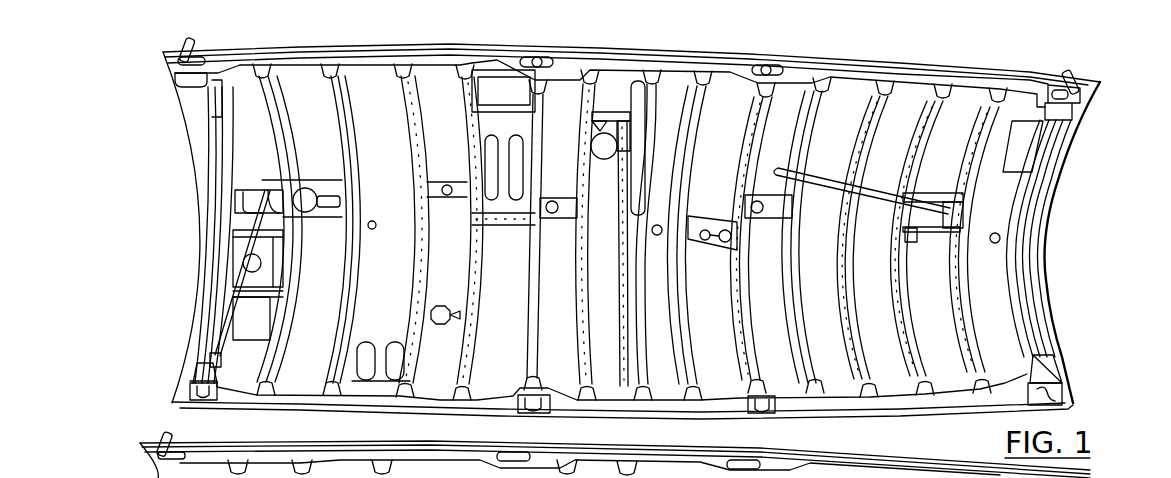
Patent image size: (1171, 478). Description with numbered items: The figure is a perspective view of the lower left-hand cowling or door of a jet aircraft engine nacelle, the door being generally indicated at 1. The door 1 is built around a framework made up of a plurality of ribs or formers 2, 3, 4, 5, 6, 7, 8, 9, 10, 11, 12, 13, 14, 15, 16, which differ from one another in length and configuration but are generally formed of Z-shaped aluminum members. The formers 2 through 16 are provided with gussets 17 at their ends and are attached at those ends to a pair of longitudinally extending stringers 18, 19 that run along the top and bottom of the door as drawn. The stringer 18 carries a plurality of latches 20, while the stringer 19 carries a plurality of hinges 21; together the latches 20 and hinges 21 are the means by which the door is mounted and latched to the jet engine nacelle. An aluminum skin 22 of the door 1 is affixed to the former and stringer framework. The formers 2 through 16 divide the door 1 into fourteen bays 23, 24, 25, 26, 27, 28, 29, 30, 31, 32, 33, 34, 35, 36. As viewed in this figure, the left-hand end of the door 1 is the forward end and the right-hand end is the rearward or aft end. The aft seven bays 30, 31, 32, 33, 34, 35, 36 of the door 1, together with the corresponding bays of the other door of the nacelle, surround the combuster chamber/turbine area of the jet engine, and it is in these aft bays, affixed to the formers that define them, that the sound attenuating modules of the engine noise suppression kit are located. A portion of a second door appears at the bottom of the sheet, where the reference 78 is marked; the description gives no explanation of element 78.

The lower left-hand engine nacelle door 1 is at (1047, 270).
The former 2 is at (224, 118).
The former 3 is at (290, 117).
The former 4 is at (356, 120).
The former 5 is at (425, 130).
The former 6 is at (481, 92).
The former 7 is at (542, 102).
The former 8 is at (591, 93).
The former 9 is at (651, 100).
The former 10 is at (694, 112).
The former 11 is at (757, 137).
The former 12 is at (810, 122).
The former 13 is at (866, 127).
The former 14 is at (922, 133).
The former 15 is at (984, 135).
The former 16 is at (1044, 148).
The gusset 17 is at (265, 62).
The stringer 18 is at (797, 73).
The stringer 19 is at (665, 408).
The latch 20 is at (188, 46).
The hinge 21 is at (190, 404).
The aluminum skin 22 is at (198, 287).
The bay 23 is at (265, 323).
The bay 24 is at (330, 291).
The bay 25 is at (393, 293).
The bay 26 is at (455, 296).
The bay 27 is at (514, 302).
The bay 28 is at (569, 308).
The bay 29 is at (615, 303).
The bay 30 is at (665, 310).
The bay 31 is at (720, 314).
The bay 32 is at (778, 319).
The bay 33 is at (830, 319).
The bay 34 is at (886, 328).
The bay 35 is at (943, 328).
The bay 36 is at (1001, 328).
The rail of second panel 78 is at (707, 477).